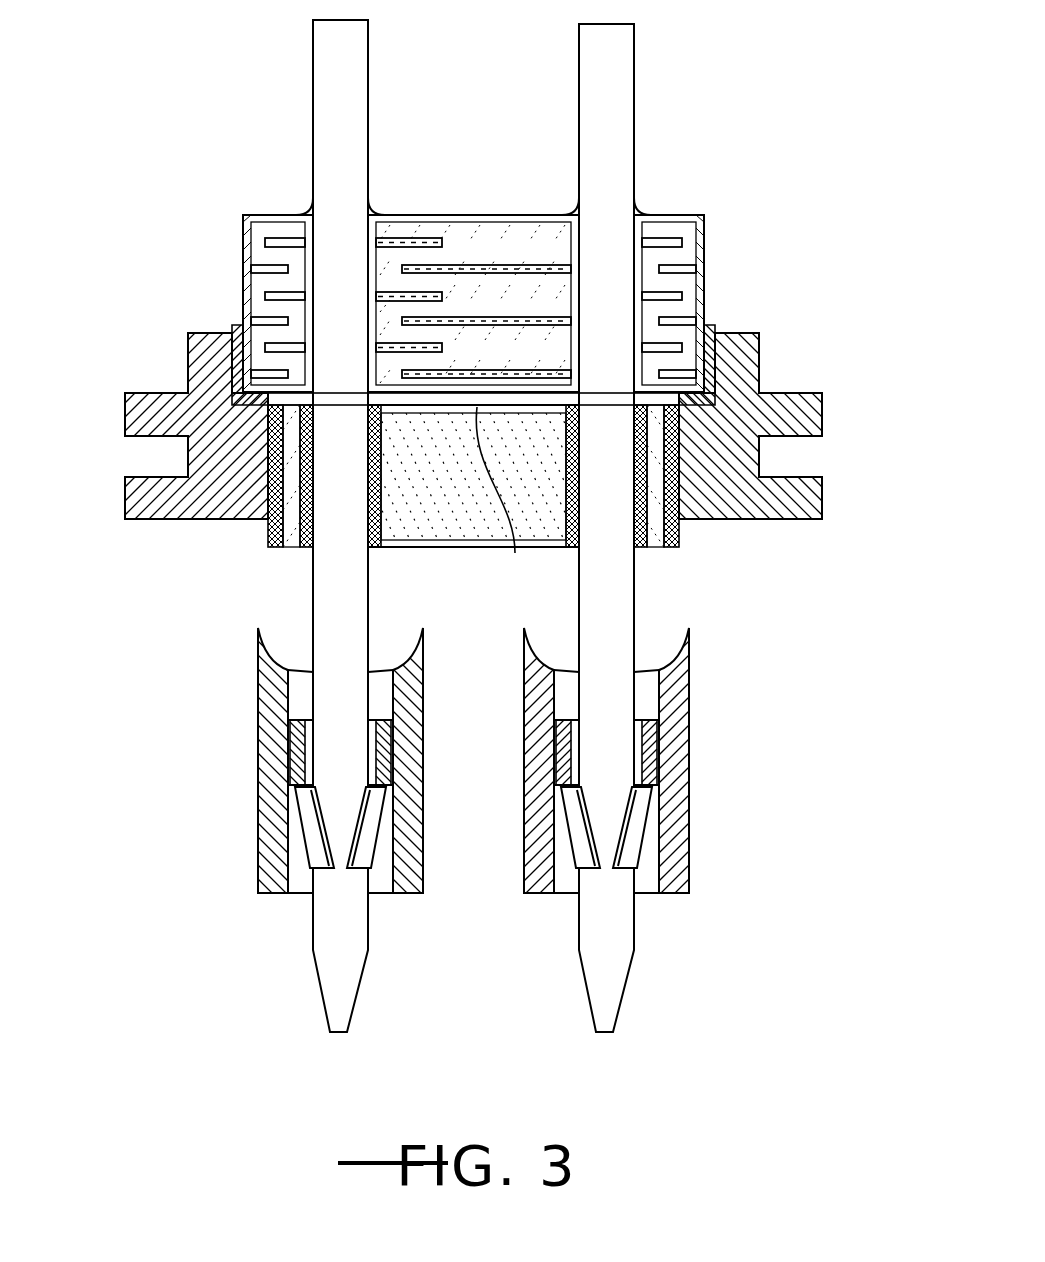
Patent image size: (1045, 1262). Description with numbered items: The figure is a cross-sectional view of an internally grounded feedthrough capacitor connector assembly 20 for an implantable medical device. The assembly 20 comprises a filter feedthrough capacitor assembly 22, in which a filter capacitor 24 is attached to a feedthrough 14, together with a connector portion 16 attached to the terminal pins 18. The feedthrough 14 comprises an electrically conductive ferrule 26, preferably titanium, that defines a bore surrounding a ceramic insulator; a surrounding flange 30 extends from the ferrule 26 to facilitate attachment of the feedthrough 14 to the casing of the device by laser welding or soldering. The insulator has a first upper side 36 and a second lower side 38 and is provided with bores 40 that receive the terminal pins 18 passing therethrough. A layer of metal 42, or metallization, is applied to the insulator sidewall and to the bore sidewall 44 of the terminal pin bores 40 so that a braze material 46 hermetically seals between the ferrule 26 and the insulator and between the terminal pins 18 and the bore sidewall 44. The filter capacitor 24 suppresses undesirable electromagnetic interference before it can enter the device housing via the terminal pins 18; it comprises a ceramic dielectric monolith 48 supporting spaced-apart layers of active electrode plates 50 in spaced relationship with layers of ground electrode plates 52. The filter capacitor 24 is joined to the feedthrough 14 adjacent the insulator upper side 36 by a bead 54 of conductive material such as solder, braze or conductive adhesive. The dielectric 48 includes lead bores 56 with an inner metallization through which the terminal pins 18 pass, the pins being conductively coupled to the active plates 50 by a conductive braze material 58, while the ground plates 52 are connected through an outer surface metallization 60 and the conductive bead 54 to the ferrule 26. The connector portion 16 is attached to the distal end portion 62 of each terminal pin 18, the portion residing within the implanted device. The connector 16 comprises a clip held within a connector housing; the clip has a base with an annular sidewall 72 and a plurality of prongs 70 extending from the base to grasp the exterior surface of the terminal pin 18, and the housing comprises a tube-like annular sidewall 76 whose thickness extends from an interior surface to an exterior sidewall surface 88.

The feedthrough 14 is at (190, 525).
The connector portion 16 is at (475, 818).
The terminal pins 18 is at (579, 101).
The internally grounded feedthrough capacitor connector assembly 20 is at (468, 242).
The filter feedthrough capacitor assembly 22 is at (156, 446).
The filter capacitor 24 is at (722, 263).
The ferrule 26 is at (780, 507).
The surrounding flange 30 is at (793, 461).
The first upper side 36 is at (460, 548).
The second lower side 38 is at (471, 513).
The terminal pin bores 40 is at (305, 552).
The metallization layer 42 is at (378, 550).
The bore sidewall 44 is at (283, 495).
The braze material 46 is at (690, 425).
The dielectric monolith 48 is at (473, 272).
The active electrode plates 50 is at (442, 235).
The ground electrode plates 52 is at (479, 300).
The bead of conductive material 54 is at (237, 332).
The lead bores 56 is at (298, 215).
The conductive braze material 58 is at (640, 215).
The outer surface metallization 60 is at (243, 292).
The distal end portion 62 is at (318, 622).
The prongs 70 is at (367, 842).
The annular sidewall 72 is at (383, 748).
The annular sidewall 76 is at (270, 818).
The exterior sidewall surface 88 is at (428, 838).